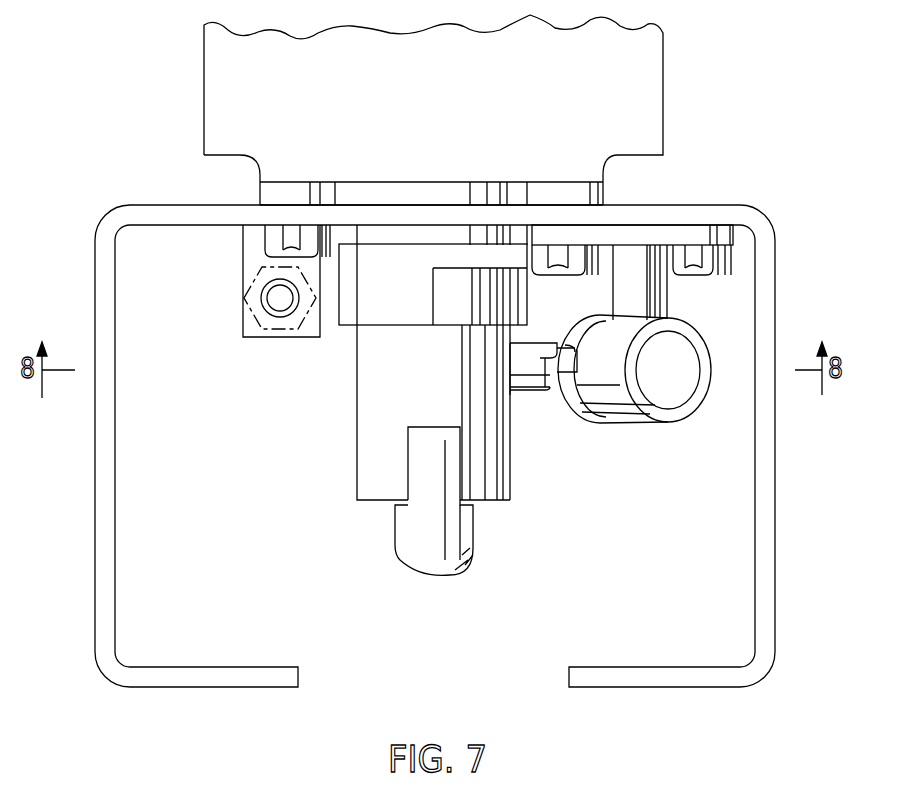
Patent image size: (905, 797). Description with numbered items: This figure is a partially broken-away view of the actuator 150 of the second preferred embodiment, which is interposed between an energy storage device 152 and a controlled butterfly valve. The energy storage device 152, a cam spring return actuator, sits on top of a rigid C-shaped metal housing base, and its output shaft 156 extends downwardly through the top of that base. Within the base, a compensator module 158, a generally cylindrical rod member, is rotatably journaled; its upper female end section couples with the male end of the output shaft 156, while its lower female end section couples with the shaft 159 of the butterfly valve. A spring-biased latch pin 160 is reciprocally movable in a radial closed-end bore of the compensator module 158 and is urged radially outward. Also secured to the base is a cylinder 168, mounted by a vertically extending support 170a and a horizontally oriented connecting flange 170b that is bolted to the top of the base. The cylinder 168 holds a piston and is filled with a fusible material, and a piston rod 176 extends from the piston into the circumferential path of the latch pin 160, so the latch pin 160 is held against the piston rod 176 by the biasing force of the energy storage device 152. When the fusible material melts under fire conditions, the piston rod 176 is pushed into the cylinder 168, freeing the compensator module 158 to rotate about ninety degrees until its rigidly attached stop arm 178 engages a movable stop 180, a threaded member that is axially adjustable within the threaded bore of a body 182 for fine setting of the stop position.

The actuator 150 is at (792, 210).
The energy storage device 152 is at (452, 111).
The output shaft 156 is at (507, 238).
The compensator module 158 is at (363, 400).
The shaft 159 is at (475, 545).
The latch pin 160 is at (530, 348).
The cylinder 168 is at (640, 420).
The vertically extending support 170a is at (665, 302).
The connecting flange 170b is at (688, 232).
The piston rod 176 is at (553, 395).
The stop arm 178 is at (440, 303).
The movable stop 180 is at (272, 298).
The body 182 is at (243, 263).